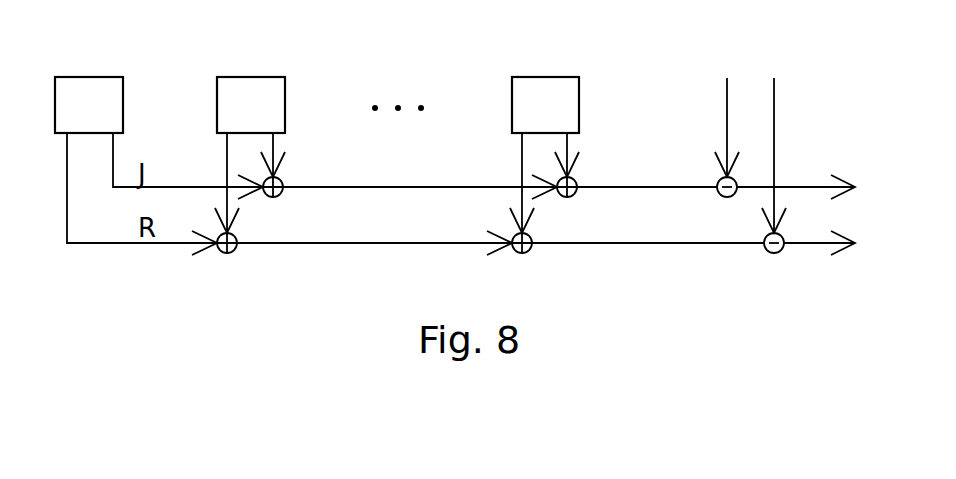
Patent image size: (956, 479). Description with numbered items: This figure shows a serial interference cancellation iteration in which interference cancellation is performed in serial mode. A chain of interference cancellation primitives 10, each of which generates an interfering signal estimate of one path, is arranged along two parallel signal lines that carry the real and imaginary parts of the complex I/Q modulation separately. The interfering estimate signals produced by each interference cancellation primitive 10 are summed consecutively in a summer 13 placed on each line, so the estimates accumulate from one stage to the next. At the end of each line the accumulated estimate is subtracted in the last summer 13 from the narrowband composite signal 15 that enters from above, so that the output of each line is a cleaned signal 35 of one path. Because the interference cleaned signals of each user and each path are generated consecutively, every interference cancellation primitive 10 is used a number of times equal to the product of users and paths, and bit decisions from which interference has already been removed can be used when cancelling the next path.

The interference cancellation primitive 10 is at (123, 93).
The summer 13 is at (283, 180).
The narrowband signal 15 is at (727, 92).
The cleaned signal 35 is at (795, 187).